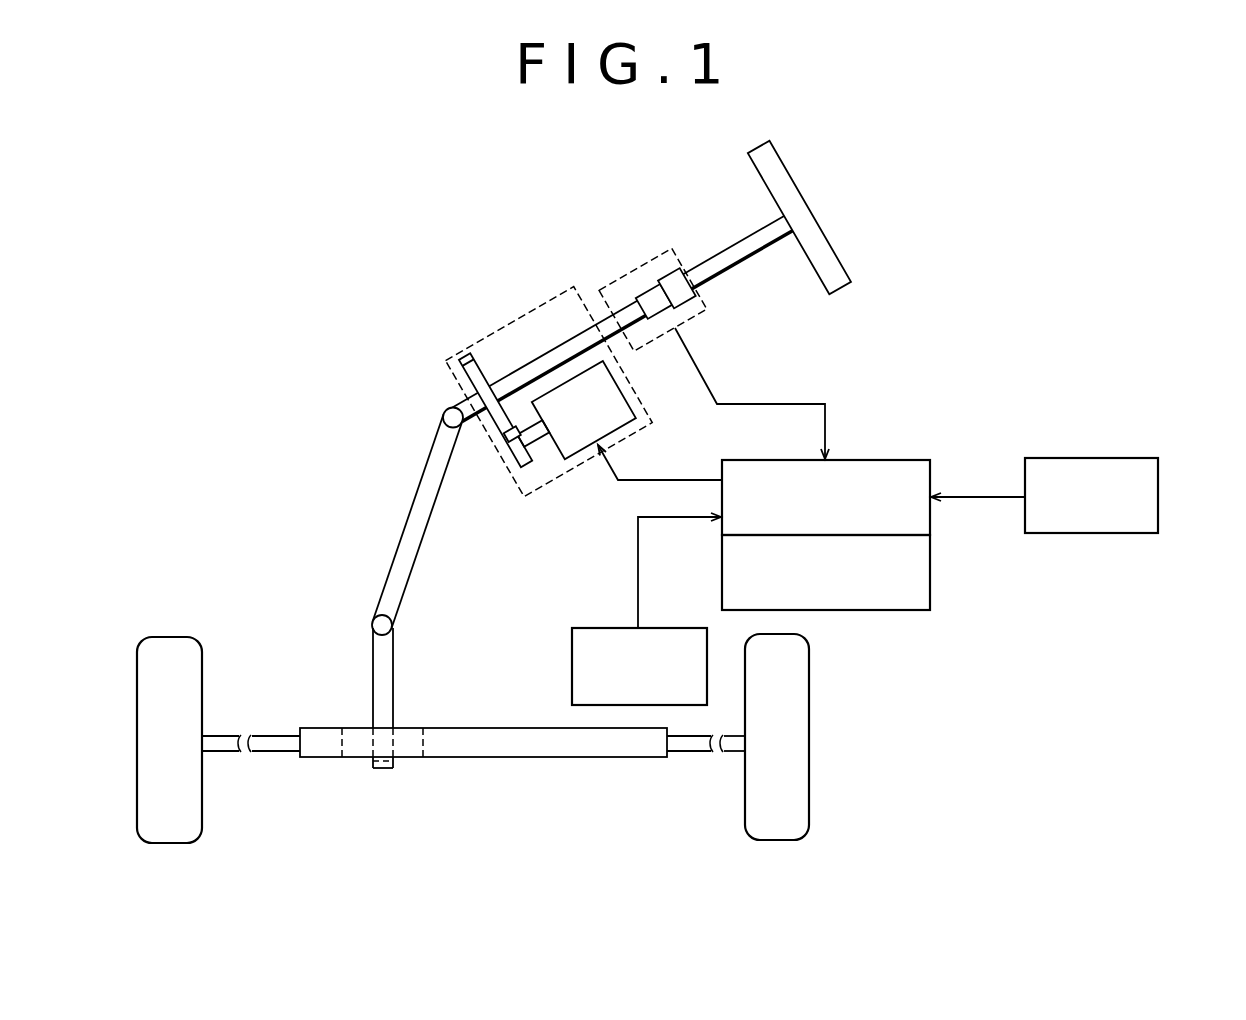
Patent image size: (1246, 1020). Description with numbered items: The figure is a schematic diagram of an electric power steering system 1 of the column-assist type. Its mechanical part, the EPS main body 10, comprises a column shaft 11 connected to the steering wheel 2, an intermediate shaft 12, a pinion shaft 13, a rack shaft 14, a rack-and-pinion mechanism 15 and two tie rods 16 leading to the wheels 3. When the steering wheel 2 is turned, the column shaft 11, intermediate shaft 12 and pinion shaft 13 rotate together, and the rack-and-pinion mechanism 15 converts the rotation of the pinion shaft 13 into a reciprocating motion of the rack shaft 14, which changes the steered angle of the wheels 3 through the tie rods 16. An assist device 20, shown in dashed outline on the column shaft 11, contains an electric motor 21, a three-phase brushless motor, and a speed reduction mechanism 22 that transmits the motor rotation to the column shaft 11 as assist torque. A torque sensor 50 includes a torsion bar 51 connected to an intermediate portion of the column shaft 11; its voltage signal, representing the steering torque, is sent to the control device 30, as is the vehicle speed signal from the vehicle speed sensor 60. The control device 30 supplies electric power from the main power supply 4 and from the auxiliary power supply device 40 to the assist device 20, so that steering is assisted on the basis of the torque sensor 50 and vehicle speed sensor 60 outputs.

The electric power steering system 1 is at (958, 268).
The steering wheel 2 is at (810, 204).
The wheels 3 is at (170, 845).
The main power supply 4 is at (1160, 495).
The EPS main body 10 is at (335, 330).
The column shaft 11 is at (462, 404).
The intermediate shaft 12 is at (412, 504).
The pinion shaft 13 is at (373, 677).
The rack shaft 14 is at (485, 727).
The rack-and-pinion mechanism 15 is at (410, 736).
The tie rods 16 is at (272, 755).
The assist device 20 is at (571, 389).
The electric motor 21 is at (617, 400).
The speed reduction mechanism 22 is at (512, 462).
The control device 30 is at (897, 458).
The auxiliary power supply device 40 is at (932, 572).
The torque sensor 50 is at (681, 284).
The torsion bar 51 is at (646, 288).
The vehicle speed sensor 60 is at (610, 628).